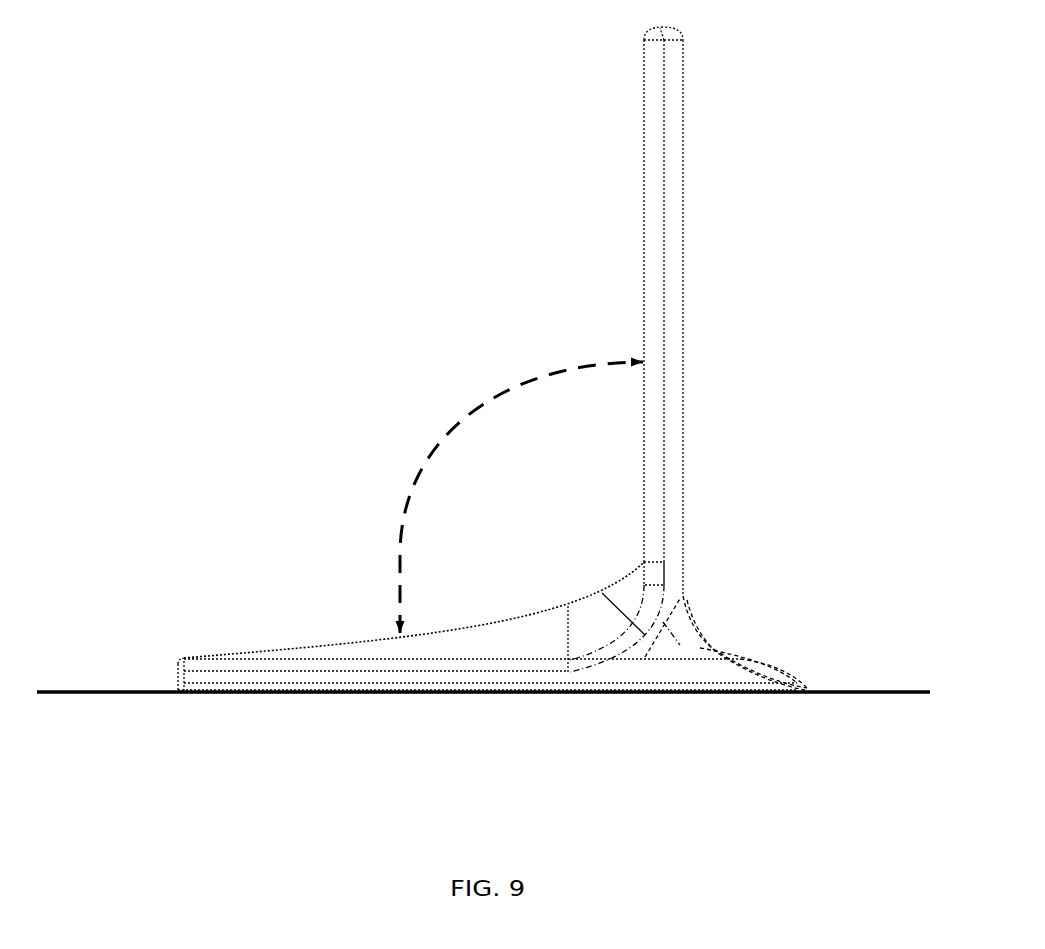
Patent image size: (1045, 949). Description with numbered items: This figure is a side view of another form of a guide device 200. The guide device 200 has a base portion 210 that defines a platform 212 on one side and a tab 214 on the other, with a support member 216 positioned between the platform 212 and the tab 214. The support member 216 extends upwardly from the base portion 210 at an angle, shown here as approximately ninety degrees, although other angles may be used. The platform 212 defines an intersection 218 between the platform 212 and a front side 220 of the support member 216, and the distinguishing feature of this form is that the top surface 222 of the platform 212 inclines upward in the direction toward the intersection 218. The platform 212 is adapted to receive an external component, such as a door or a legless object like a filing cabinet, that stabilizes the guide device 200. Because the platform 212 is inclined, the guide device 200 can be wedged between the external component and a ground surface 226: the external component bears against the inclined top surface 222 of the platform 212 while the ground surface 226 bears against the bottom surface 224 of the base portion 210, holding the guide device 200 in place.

The guide device 200 is at (333, 111).
The base portion 210 is at (207, 573).
The platform 212 is at (350, 652).
The tab 214 is at (775, 685).
The support member 216 is at (678, 311).
The intersection 218 is at (593, 561).
The front side 220 is at (643, 155).
The top surface 222 is at (520, 606).
The bottom surface 224 is at (451, 700).
The ground surface 226 is at (135, 691).